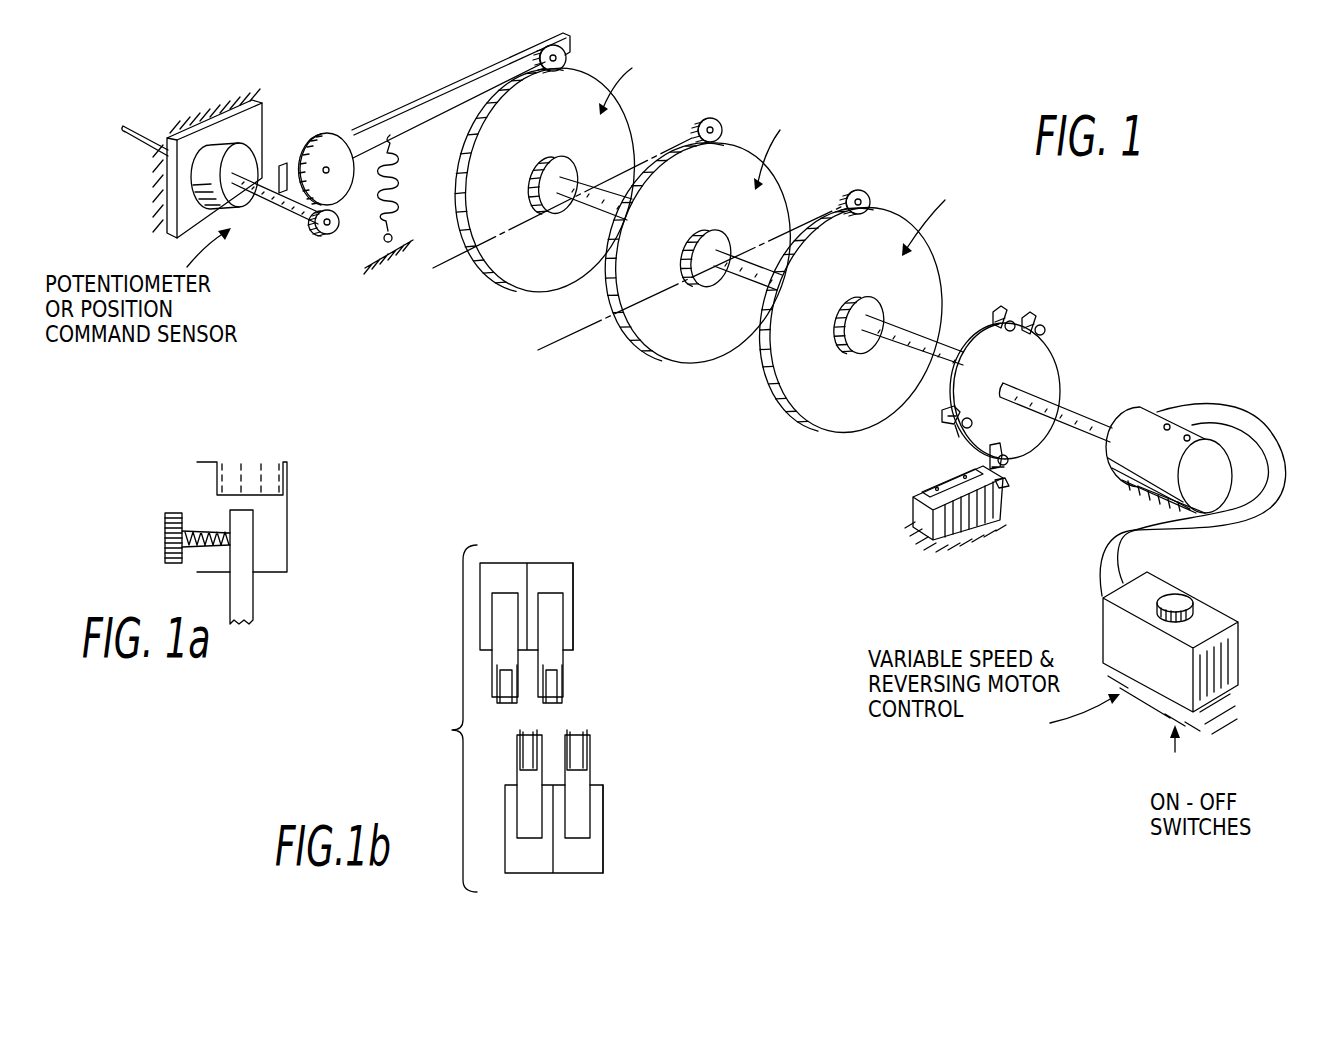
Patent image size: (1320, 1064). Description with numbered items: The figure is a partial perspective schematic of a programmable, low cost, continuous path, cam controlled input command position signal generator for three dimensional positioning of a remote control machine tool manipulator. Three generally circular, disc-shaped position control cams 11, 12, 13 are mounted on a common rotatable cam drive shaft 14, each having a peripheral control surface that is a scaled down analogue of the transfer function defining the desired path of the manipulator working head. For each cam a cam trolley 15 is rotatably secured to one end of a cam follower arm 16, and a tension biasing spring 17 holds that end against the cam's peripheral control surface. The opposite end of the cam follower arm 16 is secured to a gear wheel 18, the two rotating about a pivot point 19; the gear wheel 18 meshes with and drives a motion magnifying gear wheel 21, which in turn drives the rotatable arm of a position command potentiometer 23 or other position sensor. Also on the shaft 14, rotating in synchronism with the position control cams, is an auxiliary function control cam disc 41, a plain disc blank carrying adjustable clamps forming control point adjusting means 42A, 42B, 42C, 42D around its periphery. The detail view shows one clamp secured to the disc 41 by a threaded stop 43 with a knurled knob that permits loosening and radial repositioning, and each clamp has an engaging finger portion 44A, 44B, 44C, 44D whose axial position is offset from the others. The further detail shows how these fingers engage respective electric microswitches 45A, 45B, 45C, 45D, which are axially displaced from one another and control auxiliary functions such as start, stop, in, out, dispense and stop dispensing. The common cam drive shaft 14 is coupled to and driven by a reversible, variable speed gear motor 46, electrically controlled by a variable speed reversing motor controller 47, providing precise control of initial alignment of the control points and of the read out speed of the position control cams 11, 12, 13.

In FIG. 1, the position control cam 11 is at (580, 78).
In FIG. 1, the position control cam 12 is at (732, 170).
In FIG. 1, the position control cam 13 is at (940, 254).
In FIG. 1, the common rotatable cam drive shaft 14 is at (593, 197).
In FIG. 1, the cam trolley 15 is at (545, 49).
In FIG. 1, the cam follower arm 16 is at (419, 120).
In FIG. 1, the tension biasing spring 17 is at (397, 188).
In FIG. 1, the gear wheel 18 is at (318, 133).
In FIG. 1, the pivot point 19 is at (326, 170).
In FIG. 1, the motion magnifying gear wheel 21 is at (340, 231).
In FIG. 1, the position command potentiometer 23 is at (218, 153).
In FIG. 1, the auxiliary function control cam disc 41 is at (1043, 378).
In FIG. 1A, the auxiliary function control cam disc 41 is at (255, 602).
In FIG. 1, the control point adjusting means 42A is at (1043, 312).
In FIG. 1A, the control point adjusting means 42A is at (272, 546).
In FIG. 1, the control point adjusting means 42B is at (1000, 313).
In FIG. 1, the control point adjusting means 42C is at (953, 423).
In FIG. 1, the control point adjusting means 42D is at (1000, 477).
In FIG. 1A, the threaded stop 43 is at (163, 548).
In FIG. 1A, the engaging finger portion 44A is at (202, 481).
In FIG. 1B, the engaging finger portion 44A is at (505, 685).
In FIG. 1A, the engaging finger portion 44B is at (232, 460).
In FIG. 1B, the engaging finger portion 44B is at (528, 752).
In FIG. 1A, the engaging finger portion 44C is at (255, 470).
In FIG. 1B, the engaging finger portion 44C is at (550, 688).
In FIG. 1A, the engaging finger portion 44D is at (280, 480).
In FIG. 1B, the engaging finger portion 44D is at (575, 757).
In FIG. 1, the electric microswitch 45A is at (920, 492).
In FIG. 1B, the electric microswitch 45A is at (488, 632).
In FIG. 1B, the electric microswitch 45B is at (512, 815).
In FIG. 1B, the electric microswitch 45C is at (566, 632).
In FIG. 1B, the electric microswitch 45D is at (596, 818).
In FIG. 1, the reversible variable speed gear motor 46 is at (1140, 490).
In FIG. 1, the variable speed reversing motor controller 47 is at (1150, 587).